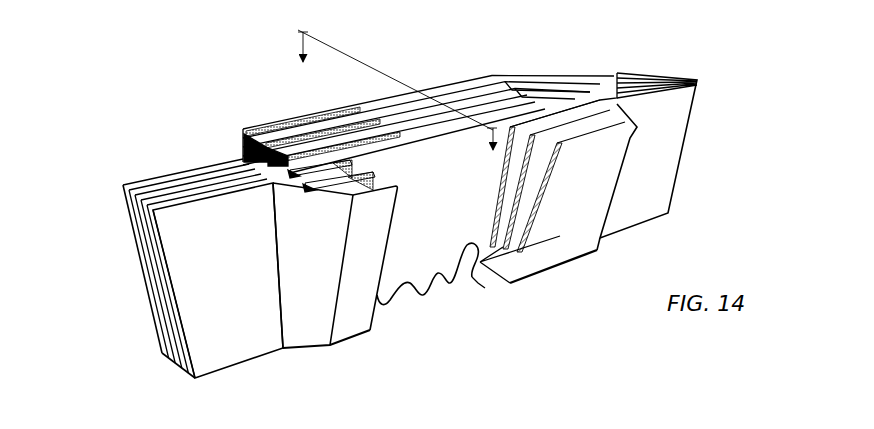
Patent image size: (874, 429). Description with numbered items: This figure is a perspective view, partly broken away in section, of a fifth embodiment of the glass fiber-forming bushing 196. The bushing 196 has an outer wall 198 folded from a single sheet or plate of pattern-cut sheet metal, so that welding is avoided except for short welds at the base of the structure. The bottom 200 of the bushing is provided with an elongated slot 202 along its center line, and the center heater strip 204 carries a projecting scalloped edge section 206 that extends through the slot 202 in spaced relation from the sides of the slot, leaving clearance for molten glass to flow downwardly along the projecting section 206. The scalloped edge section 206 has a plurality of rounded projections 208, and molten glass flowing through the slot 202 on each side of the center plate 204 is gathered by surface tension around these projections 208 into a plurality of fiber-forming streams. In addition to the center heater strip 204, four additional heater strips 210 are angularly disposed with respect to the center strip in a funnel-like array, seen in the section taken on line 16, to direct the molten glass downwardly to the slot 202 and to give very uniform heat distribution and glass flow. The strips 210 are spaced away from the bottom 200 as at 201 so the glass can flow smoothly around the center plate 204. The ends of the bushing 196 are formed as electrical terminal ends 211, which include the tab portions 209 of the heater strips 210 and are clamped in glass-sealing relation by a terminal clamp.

The section line 16- 16 is at (391, 105).
The bushing 196 is at (547, 73).
The outer wall 198 is at (423, 92).
The bottom 200 is at (503, 290).
The spacing 201 is at (484, 262).
The elongated slot 202 is at (467, 290).
The center heater strip 204 is at (447, 227).
The scalloped edge section 206 is at (407, 303).
The rounded projections 208 is at (425, 300).
The tab portions 209 is at (146, 202).
The heater strips 210 is at (331, 134).
The electrical terminal ends 211 is at (158, 176).